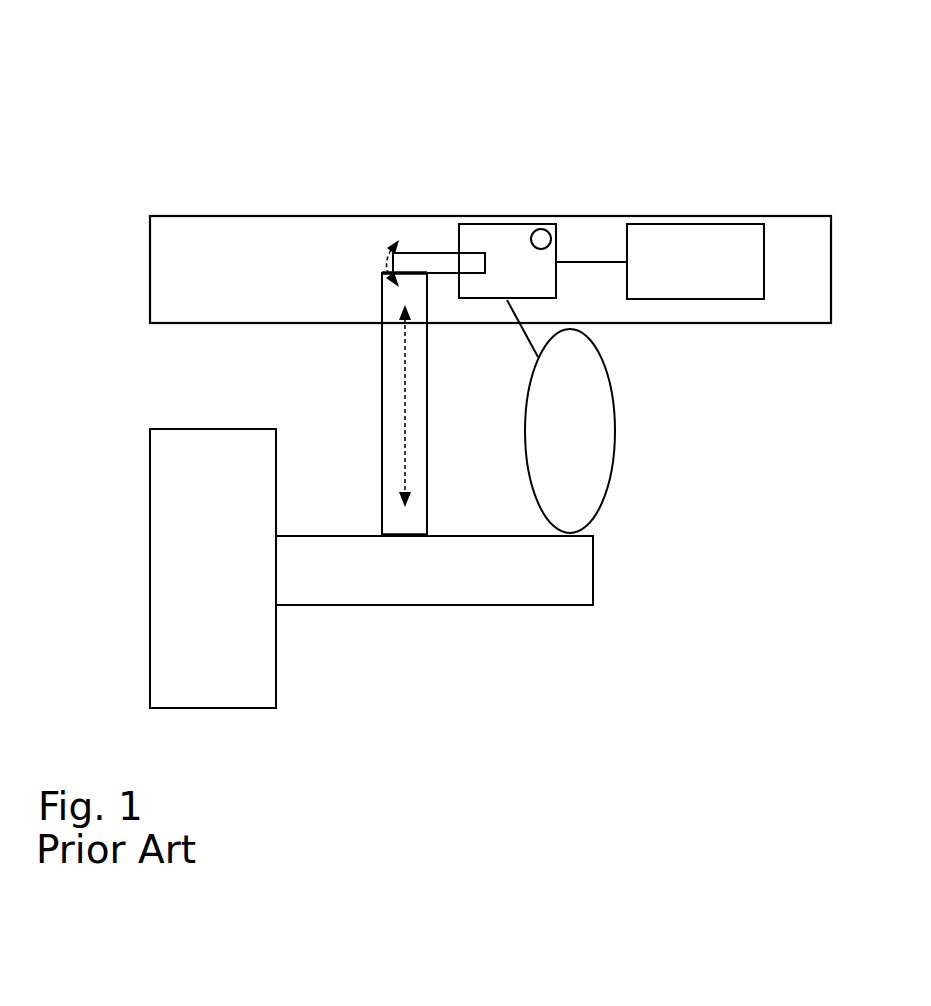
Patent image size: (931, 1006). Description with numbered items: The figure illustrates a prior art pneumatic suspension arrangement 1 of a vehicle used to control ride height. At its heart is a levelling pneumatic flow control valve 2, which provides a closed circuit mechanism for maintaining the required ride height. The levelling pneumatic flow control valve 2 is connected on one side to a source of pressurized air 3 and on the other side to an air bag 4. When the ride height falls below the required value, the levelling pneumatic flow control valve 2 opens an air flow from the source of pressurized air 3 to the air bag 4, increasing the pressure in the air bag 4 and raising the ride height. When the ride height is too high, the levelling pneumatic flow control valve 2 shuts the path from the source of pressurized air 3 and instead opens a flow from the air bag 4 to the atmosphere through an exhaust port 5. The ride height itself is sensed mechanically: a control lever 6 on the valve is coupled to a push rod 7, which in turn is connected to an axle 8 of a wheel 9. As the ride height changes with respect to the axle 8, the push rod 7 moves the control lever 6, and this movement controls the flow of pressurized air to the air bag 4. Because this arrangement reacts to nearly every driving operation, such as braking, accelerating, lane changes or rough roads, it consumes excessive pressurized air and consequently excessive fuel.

The pneumatic suspension arrangement 1 is at (158, 94).
The levelling pneumatic flow control valve 2 is at (470, 229).
The source of pressurized air 3 is at (723, 228).
The air bag 4 is at (613, 453).
The exhaust port 5 is at (537, 232).
The control lever 6 is at (400, 250).
The push rod 7 is at (383, 448).
The axle 8 is at (353, 552).
The wheel 9 is at (193, 440).